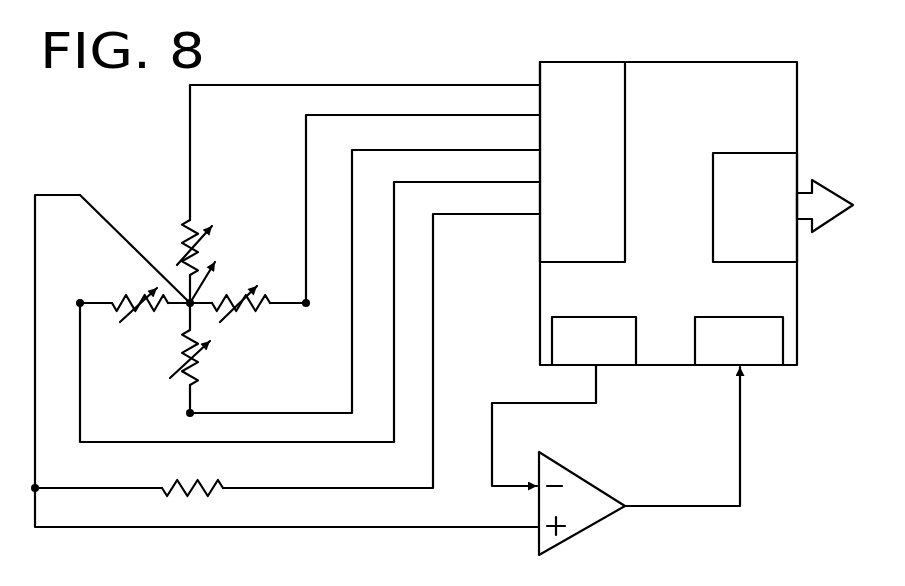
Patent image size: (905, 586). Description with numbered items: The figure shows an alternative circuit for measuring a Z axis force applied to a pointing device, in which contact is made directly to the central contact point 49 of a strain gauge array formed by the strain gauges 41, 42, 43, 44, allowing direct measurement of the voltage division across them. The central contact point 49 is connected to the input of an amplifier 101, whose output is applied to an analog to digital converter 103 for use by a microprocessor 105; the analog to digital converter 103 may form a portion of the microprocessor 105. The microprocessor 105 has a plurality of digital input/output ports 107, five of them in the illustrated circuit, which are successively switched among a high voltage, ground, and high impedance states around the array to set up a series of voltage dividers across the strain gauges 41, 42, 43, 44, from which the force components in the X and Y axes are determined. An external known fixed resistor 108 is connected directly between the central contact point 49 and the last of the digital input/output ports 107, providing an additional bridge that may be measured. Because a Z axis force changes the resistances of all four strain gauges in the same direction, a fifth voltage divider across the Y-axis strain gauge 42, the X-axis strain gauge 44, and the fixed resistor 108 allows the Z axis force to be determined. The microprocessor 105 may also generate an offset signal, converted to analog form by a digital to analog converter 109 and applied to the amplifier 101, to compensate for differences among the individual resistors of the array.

The strain gauge 41 is at (188, 221).
The strain gauge 42 is at (120, 301).
The strain gauge 43 is at (183, 340).
The strain gauge 44 is at (255, 305).
The central contact point 49 is at (217, 275).
The amplifier 101 is at (590, 526).
The analog to digital converter 103 is at (752, 317).
The microprocessor 105 is at (752, 62).
The digital input/output ports 107 is at (605, 62).
The external fixed resistor 108 is at (208, 483).
The digital to analog converter 109 is at (615, 317).